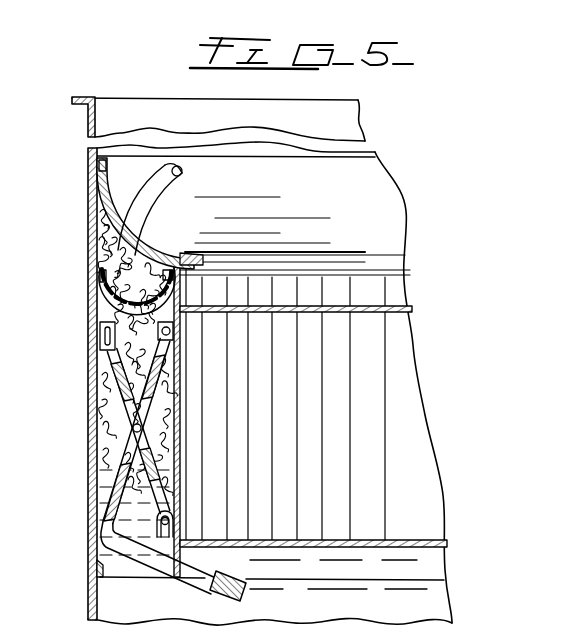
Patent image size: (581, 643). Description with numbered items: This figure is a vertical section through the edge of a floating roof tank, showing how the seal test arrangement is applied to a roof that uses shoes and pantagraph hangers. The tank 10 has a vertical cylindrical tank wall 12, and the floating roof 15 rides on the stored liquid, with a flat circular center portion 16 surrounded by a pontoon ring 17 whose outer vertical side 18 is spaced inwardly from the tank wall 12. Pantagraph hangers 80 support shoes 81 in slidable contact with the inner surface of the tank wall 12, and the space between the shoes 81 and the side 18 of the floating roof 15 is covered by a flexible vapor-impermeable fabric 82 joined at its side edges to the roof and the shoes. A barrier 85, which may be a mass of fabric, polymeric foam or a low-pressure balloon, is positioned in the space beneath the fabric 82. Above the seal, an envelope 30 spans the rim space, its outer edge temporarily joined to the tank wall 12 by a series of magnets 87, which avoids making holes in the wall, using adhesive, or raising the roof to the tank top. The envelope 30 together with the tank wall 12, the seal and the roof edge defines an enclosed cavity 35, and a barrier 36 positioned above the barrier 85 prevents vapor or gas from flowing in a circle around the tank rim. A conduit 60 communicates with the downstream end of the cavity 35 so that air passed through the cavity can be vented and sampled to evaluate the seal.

The tank 10 is at (81, 270).
The tank wall 12 is at (87, 594).
The floating roof 15 is at (334, 295).
The center portion 16 is at (423, 547).
The pontoon ring 17 is at (373, 304).
The outer vertical side 18 is at (165, 441).
The envelope 30 is at (152, 245).
The cavity 35 is at (118, 231).
The barrier 36 is at (127, 273).
The conduit 60 is at (183, 172).
The pantagraph hangers 80 is at (128, 421).
The shoes 81 is at (107, 392).
The fabric 82 is at (108, 315).
The barrier 85 is at (139, 365).
The magnets 87 is at (103, 168).